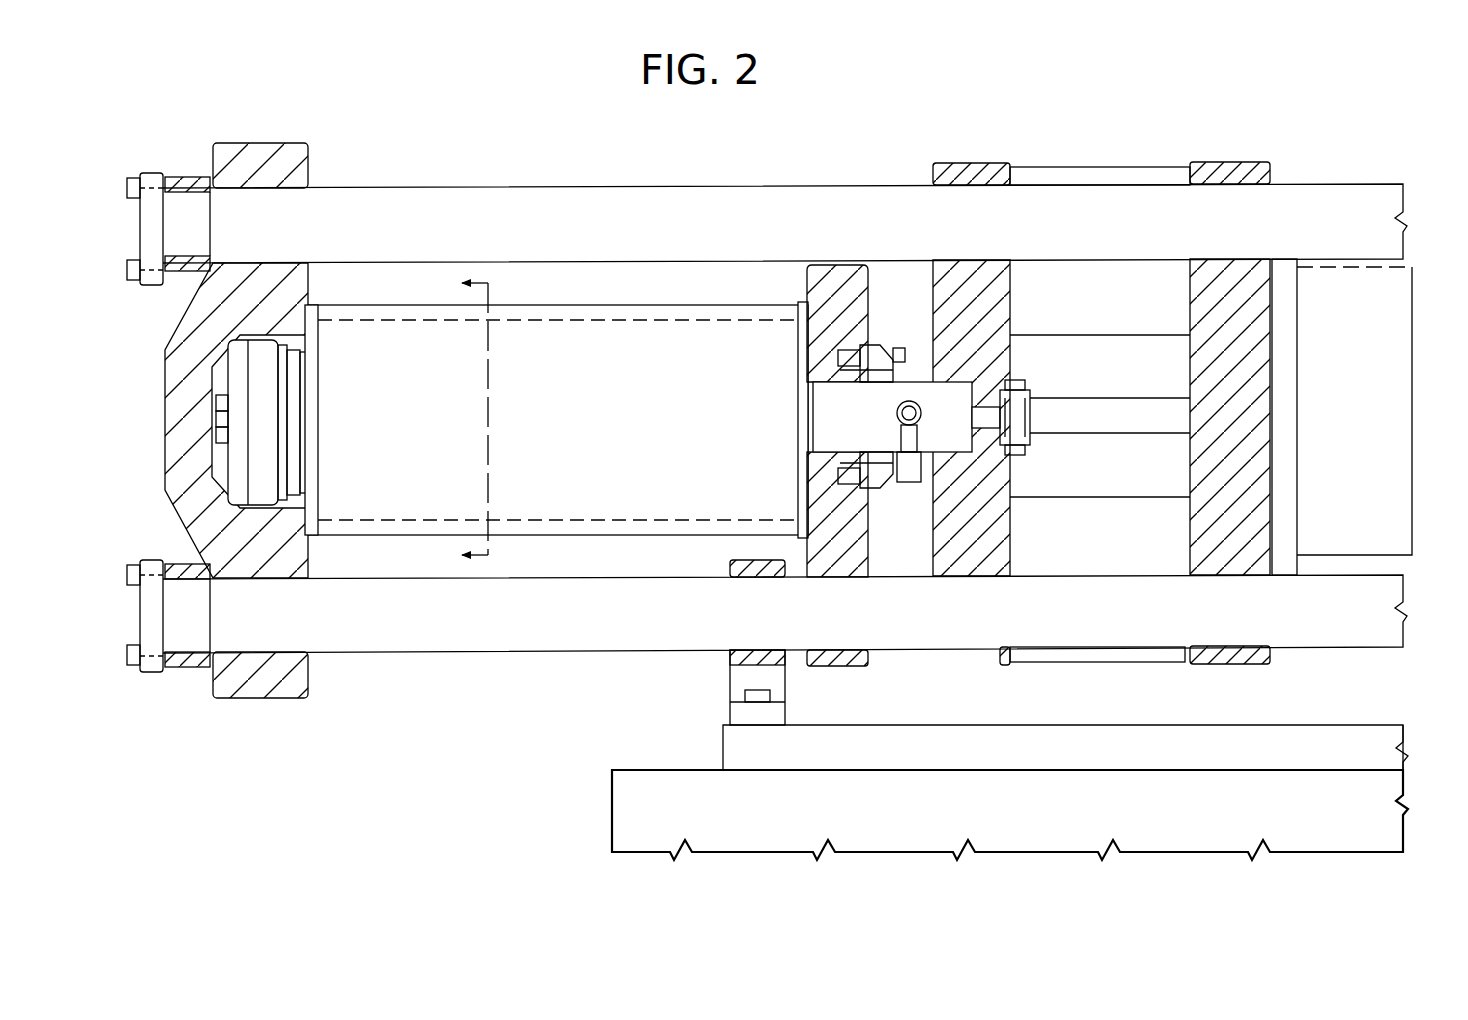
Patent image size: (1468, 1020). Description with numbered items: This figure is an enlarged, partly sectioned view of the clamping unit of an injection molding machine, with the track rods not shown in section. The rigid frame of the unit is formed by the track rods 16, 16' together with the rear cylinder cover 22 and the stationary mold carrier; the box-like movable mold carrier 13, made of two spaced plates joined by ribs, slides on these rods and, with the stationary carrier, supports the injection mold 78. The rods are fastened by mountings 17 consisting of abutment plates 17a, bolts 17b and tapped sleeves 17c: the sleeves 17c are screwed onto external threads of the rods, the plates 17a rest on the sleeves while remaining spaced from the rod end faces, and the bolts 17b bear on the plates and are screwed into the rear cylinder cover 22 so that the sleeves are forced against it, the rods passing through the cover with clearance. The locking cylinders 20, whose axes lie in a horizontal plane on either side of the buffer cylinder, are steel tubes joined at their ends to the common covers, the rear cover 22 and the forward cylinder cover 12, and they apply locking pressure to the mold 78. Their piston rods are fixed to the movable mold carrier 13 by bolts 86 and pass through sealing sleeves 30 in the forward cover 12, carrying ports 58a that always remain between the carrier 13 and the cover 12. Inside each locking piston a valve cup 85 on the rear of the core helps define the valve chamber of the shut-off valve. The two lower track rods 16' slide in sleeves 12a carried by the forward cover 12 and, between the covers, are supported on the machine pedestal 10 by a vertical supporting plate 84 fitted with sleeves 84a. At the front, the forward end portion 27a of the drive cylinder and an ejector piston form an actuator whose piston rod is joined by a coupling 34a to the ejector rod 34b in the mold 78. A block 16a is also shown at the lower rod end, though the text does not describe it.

The machine pedestal 10 is at (972, 822).
The forward cylinder cover 12 is at (848, 292).
The sleeves 12a is at (872, 652).
The movable mold carrier 13 is at (1100, 285).
The track rods 16 is at (785, 190).
The lower track rods 16' is at (785, 648).
The end block 16a is at (215, 605).
The mountings 17 is at (135, 212).
The abutment plates 17a is at (150, 617).
The bolts 17b is at (150, 667).
The tapped sleeves 17c is at (186, 667).
The hydraulic locking cylinders 20 is at (573, 439).
The rear cylinder cover 22 is at (258, 165).
The forward end portion of the cylinder 27a is at (852, 416).
The sealing sleeve 30 is at (881, 370).
The coupling 34a is at (1020, 384).
The ejector rod 34b is at (1158, 418).
The ports 58a is at (907, 484).
The injection mold 78 is at (1378, 318).
The vertical supporting plate 84 is at (745, 680).
The sleeves 84a is at (735, 572).
The valve cup 85 is at (262, 408).
The bolts 86 is at (1015, 434).